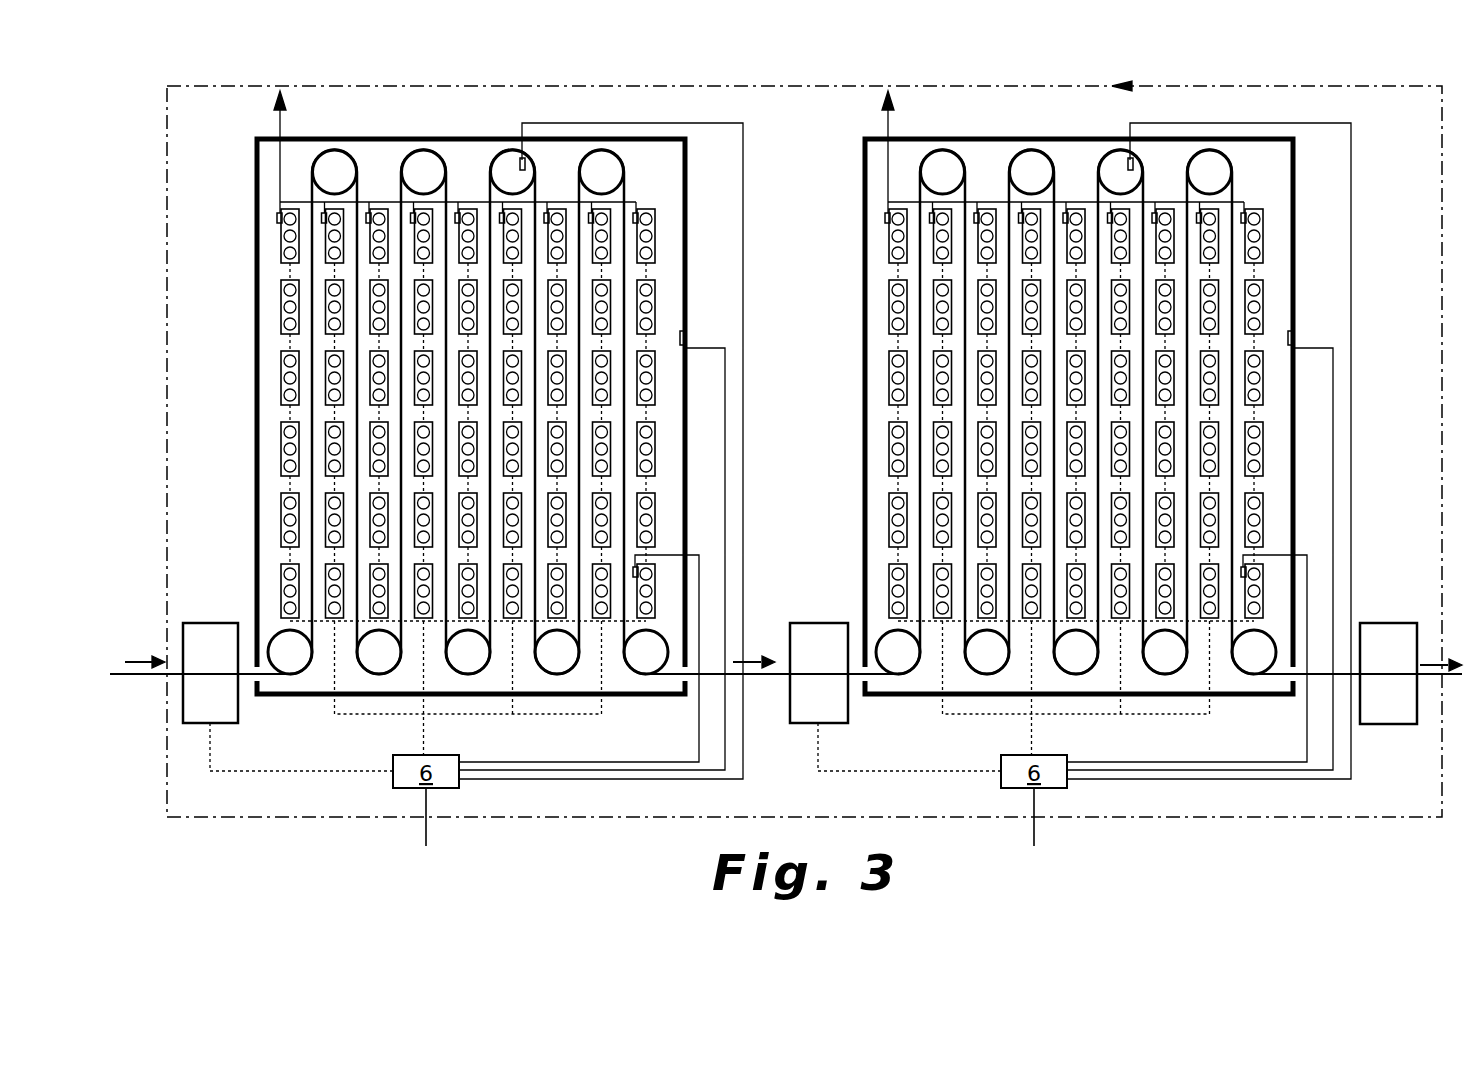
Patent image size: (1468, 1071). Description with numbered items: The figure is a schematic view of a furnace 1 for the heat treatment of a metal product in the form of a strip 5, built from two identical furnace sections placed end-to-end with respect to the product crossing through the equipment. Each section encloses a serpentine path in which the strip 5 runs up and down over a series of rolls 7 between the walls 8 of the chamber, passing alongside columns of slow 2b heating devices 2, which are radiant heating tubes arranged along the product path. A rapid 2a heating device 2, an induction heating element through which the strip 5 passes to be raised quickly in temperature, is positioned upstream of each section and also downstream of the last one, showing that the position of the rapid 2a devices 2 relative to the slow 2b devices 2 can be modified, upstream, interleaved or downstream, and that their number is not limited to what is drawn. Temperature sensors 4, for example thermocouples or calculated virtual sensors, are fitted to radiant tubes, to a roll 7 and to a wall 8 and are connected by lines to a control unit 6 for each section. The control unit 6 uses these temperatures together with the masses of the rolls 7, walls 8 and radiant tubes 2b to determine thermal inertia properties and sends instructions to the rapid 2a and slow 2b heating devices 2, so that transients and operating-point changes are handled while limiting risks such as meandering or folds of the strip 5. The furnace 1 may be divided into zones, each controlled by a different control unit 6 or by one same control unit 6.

The furnace 1 is at (1325, 92).
The heating element 2 is at (770, 452).
The rapid heating element 2a is at (212, 622).
The slow heating element 2b is at (285, 242).
The temperature sensor 4 is at (525, 156).
The strip 5 is at (127, 676).
The control unit 6 is at (732, 471).
The roll 7 is at (412, 160).
The wall 8 is at (688, 462).